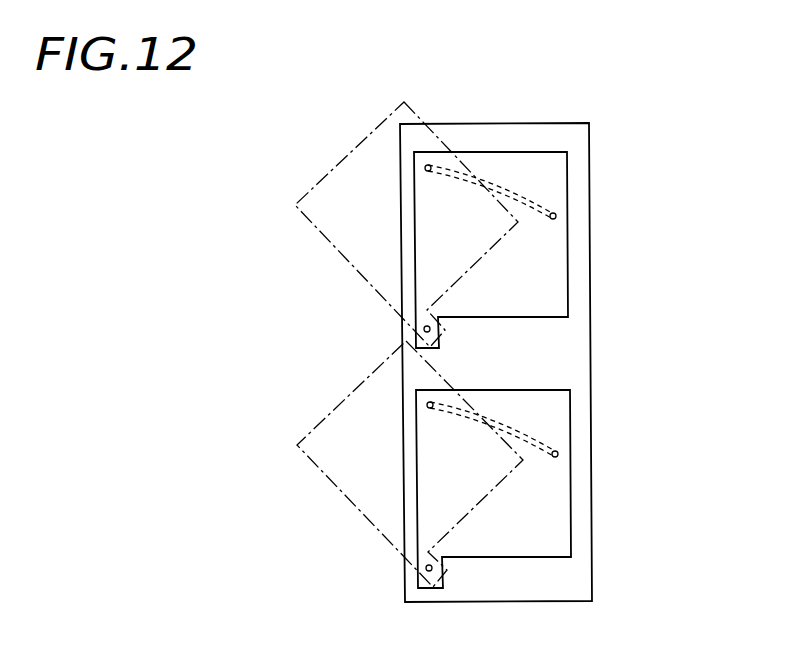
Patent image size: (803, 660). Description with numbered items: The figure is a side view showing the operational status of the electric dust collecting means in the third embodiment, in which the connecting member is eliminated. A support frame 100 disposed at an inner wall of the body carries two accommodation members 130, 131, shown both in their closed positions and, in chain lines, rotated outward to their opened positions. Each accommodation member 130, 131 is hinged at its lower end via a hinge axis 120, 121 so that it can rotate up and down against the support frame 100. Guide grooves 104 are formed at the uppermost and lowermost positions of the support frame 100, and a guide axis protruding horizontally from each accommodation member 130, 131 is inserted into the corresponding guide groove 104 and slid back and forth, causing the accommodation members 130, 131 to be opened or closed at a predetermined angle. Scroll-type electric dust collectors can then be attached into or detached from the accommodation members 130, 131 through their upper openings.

The support frame 100 is at (590, 198).
The guide groove 104 is at (515, 185).
The hinge axis 120 is at (414, 334).
The hinge axis 121 is at (423, 573).
The accommodation member 130 is at (488, 151).
The accommodation member 131 is at (570, 484).